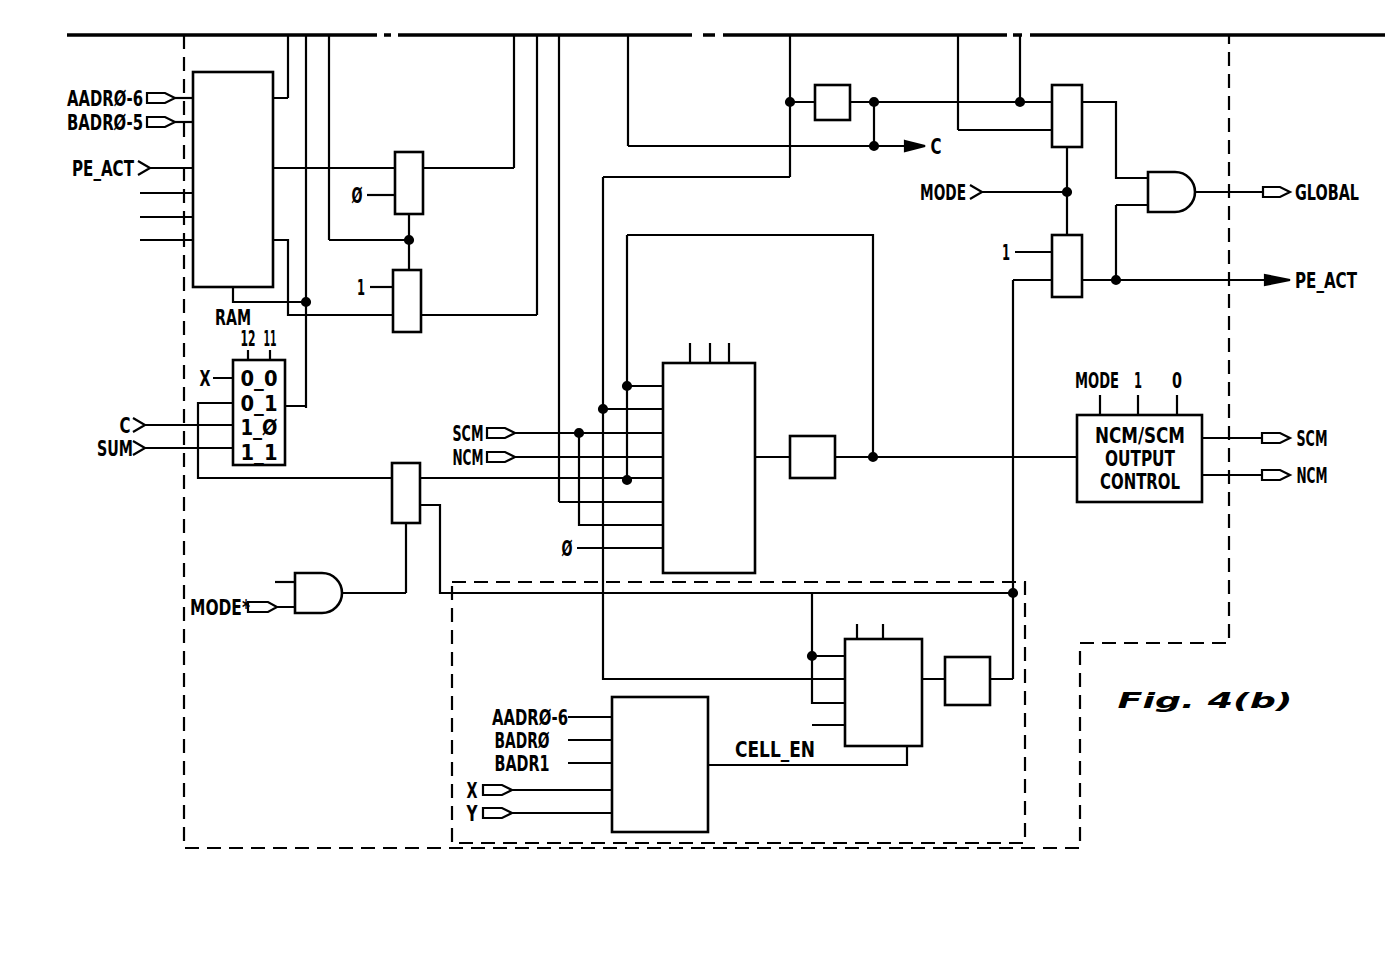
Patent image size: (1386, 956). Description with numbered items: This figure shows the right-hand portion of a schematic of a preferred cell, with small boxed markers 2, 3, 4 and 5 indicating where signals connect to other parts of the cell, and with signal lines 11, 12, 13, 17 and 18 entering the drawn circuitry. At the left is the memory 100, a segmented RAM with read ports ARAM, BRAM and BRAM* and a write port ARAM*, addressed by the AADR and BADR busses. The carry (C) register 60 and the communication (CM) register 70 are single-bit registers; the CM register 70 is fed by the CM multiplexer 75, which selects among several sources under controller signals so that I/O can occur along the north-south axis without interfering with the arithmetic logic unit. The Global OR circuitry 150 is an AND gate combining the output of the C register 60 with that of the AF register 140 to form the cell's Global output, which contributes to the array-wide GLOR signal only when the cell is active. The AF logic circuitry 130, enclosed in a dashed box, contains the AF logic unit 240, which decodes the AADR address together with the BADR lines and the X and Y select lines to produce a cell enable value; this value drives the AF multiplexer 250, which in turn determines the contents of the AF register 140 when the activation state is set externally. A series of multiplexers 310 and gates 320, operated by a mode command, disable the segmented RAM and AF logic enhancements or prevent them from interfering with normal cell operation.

The memory 100 is at (193, 268).
The reference to FIG. 2 block 2 is at (235, 57).
The multiplexers 310 is at (409, 152).
The carry (C) register 60 is at (832, 85).
The reference to FIG. 5 block 5 is at (657, 354).
The reference to FIG. 3 block 3 is at (1164, 157).
The Global OR (GLOR) circuitry 150 is at (1205, 172).
The communication (CM) register 70 is at (812, 436).
The CM multiplexer 75 is at (755, 543).
The gates 320 is at (310, 613).
The AF logic circuitry 130 is at (452, 758).
The AF logic unit 240 is at (708, 800).
The AF multiplexer 250 is at (915, 750).
The AF register 140 is at (967, 705).
The reference to FIG. 4 block 4 is at (966, 782).
The signal line 11 is at (158, 192).
The signal line 12 is at (157, 216).
The signal line 18 is at (156, 239).
The signal line 13 is at (275, 582).
The signal line 17 is at (841, 668).